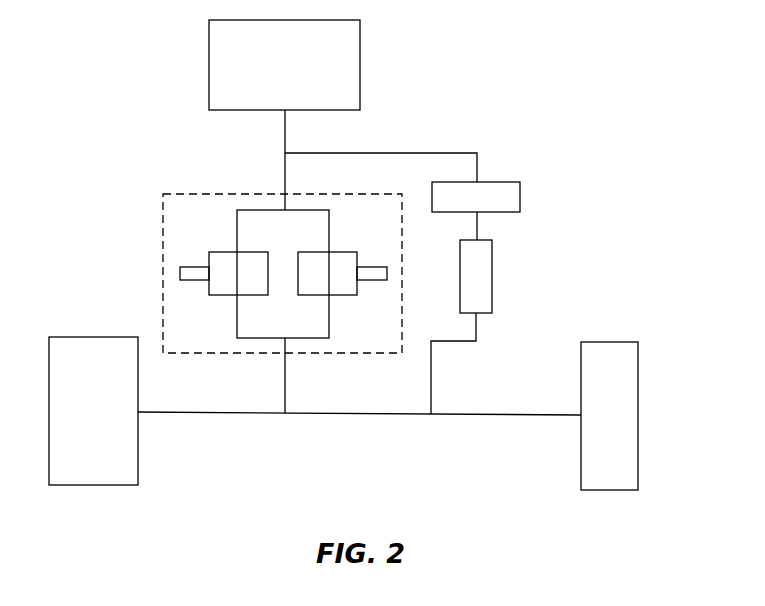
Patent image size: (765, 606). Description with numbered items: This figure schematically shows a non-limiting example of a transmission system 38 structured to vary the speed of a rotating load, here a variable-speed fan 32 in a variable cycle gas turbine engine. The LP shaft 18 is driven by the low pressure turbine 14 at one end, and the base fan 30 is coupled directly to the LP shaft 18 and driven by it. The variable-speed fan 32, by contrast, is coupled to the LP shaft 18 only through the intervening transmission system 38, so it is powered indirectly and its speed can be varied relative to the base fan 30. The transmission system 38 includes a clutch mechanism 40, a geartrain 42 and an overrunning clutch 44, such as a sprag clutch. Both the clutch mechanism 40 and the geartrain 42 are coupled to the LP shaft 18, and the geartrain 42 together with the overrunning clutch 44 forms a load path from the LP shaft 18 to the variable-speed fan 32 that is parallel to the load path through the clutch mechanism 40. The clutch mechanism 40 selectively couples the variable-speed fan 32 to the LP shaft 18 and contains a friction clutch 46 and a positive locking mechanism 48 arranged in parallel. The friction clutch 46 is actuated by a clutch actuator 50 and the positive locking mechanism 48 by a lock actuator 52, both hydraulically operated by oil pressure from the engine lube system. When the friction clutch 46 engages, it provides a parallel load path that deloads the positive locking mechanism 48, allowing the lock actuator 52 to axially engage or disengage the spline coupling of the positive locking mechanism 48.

The transmission system 38 is at (572, 82).
The variable-speed fan 32 is at (361, 66).
The clutch mechanism 40 is at (186, 194).
The positive locking mechanism 48 is at (338, 252).
The overrunning clutch 44 is at (520, 197).
The geartrain 42 is at (492, 277).
The clutch actuator 50 is at (195, 267).
The friction clutch 46 is at (228, 296).
The lock actuator 52 is at (380, 282).
The base fan 30 is at (138, 452).
The low pressure turbine 14 is at (638, 402).
The LP shaft 18 is at (518, 416).